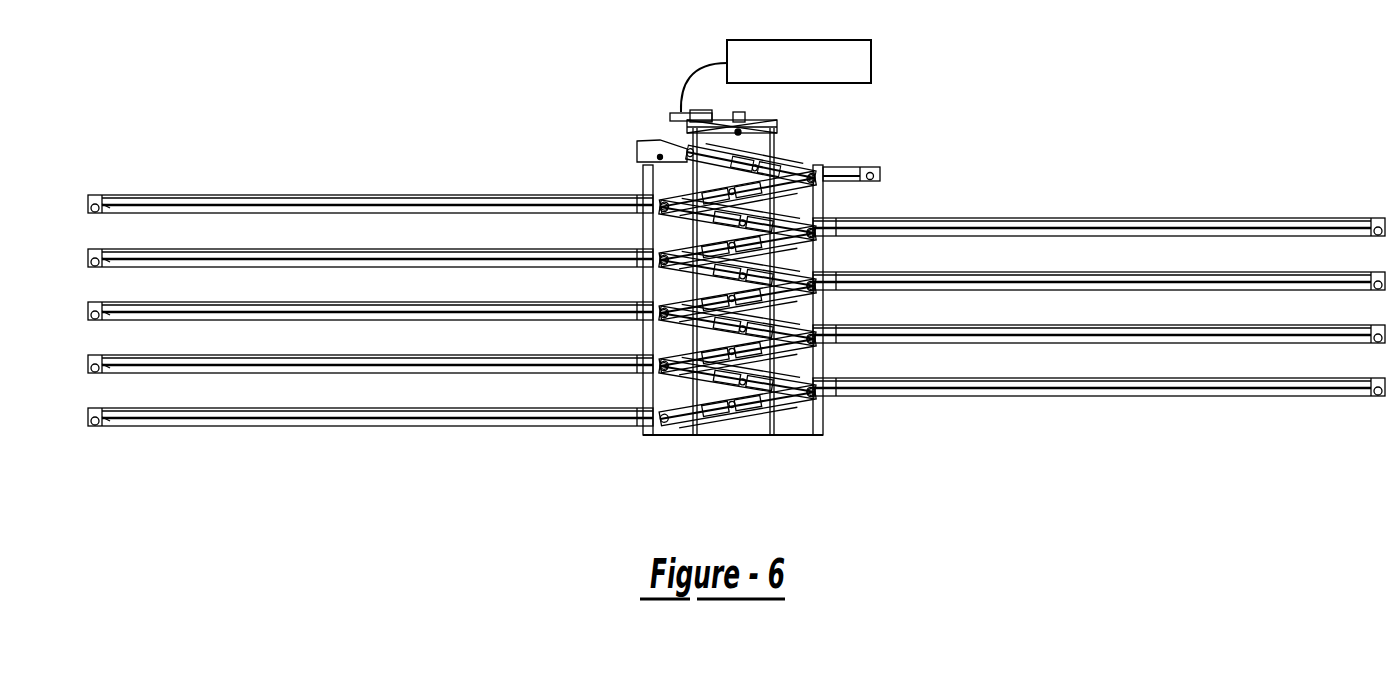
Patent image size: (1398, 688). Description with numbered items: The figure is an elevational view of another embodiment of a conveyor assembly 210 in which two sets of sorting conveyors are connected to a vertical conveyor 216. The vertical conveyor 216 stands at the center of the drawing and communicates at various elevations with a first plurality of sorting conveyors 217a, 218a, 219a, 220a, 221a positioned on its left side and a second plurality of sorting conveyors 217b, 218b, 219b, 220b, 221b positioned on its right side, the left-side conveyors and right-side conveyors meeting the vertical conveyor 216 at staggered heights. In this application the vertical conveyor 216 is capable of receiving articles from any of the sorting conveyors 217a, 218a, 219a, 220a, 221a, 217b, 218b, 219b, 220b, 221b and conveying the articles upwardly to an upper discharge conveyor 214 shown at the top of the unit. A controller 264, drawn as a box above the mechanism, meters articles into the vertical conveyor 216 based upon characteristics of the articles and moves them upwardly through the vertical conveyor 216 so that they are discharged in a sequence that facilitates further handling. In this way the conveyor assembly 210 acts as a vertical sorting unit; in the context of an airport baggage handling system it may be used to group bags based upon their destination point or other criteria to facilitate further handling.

The conveyor assembly 210 is at (600, 176).
The upper discharge conveyor 214 is at (650, 147).
The vertical conveyor 216 is at (795, 150).
The sorting conveyor 217a is at (427, 204).
The sorting conveyor 218a is at (357, 253).
The sorting conveyor 219a is at (313, 310).
The sorting conveyor 220a is at (383, 360).
The sorting conveyor 221a is at (315, 417).
The sorting conveyor 217b is at (882, 172).
The sorting conveyor 218b is at (1067, 222).
The sorting conveyor 219b is at (1043, 282).
The sorting conveyor 220b is at (1118, 330).
The sorting conveyor 221b is at (1050, 383).
The controller 264 is at (872, 56).